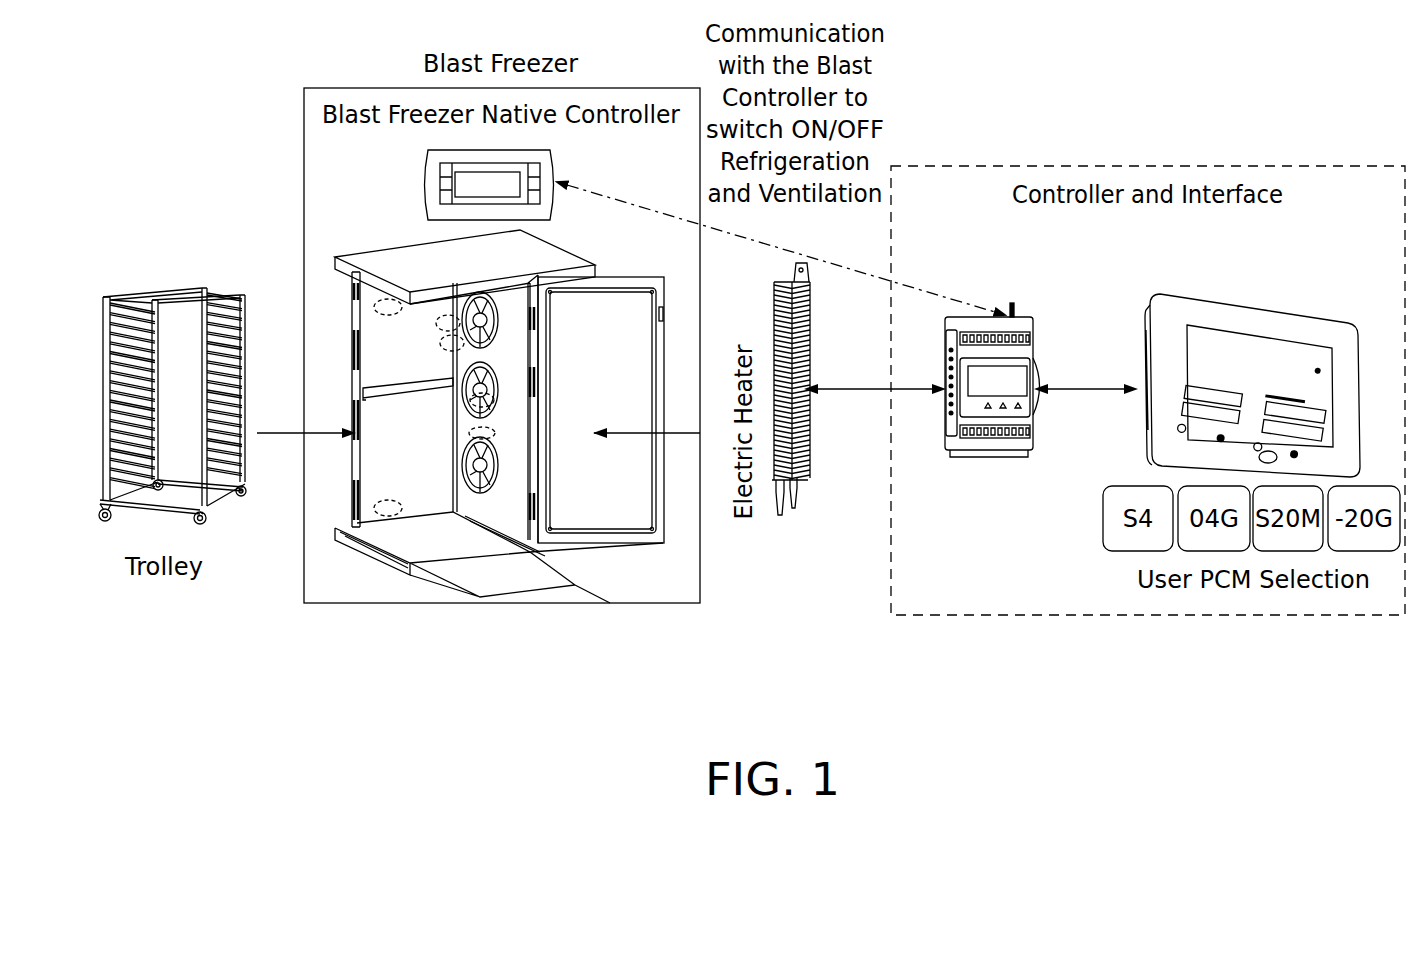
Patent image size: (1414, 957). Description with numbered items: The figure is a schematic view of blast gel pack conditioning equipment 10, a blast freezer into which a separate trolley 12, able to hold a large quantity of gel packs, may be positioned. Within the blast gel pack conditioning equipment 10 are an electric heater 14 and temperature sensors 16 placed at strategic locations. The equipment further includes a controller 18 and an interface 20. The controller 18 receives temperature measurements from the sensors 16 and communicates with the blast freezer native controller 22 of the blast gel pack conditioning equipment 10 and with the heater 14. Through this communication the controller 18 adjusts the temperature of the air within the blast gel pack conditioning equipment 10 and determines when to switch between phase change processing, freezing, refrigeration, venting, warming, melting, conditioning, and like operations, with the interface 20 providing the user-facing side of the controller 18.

The blast gel pack conditioning equipment 10 is at (363, 265).
The trolley 12 is at (120, 297).
The electric heater 14 is at (812, 345).
The temperature sensors 16 is at (403, 315).
The controller 18 is at (997, 450).
The interface 20 is at (1265, 310).
The blast freezer native controller 22 is at (553, 162).